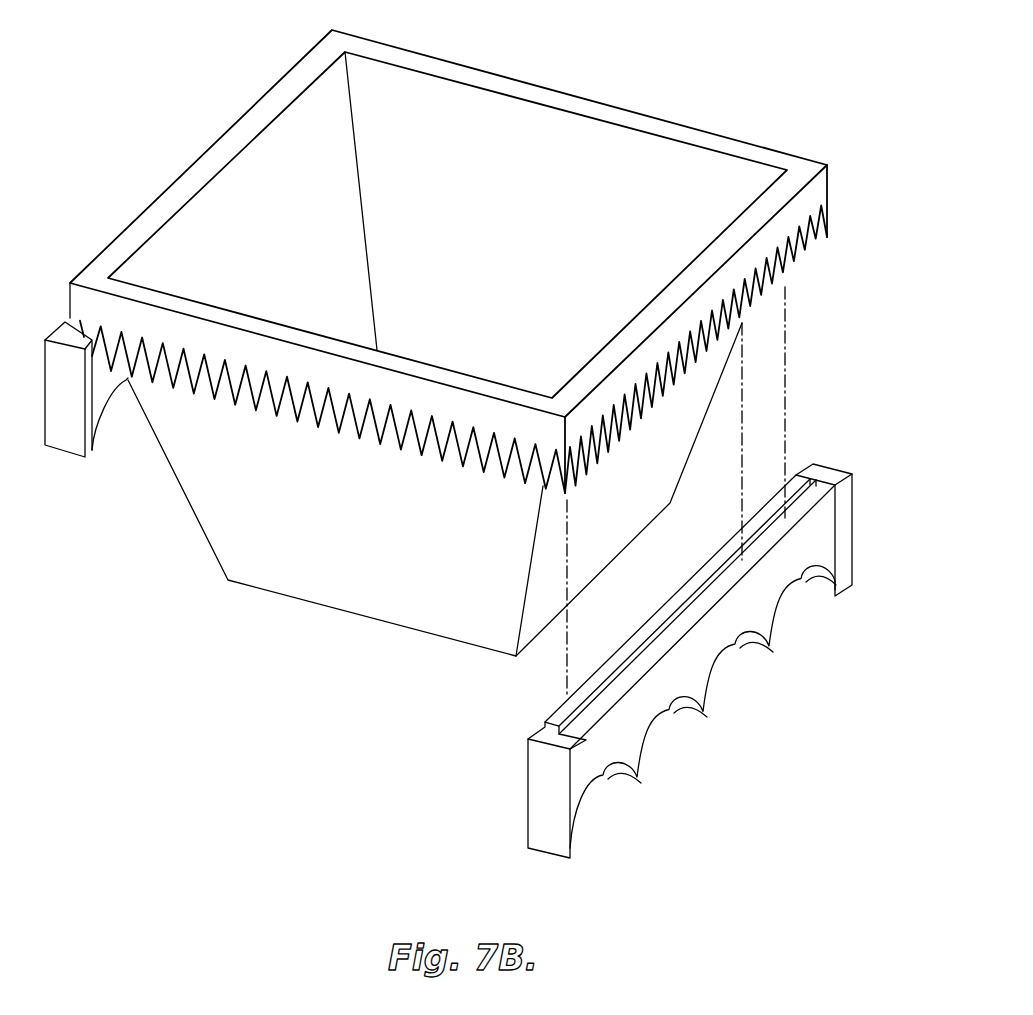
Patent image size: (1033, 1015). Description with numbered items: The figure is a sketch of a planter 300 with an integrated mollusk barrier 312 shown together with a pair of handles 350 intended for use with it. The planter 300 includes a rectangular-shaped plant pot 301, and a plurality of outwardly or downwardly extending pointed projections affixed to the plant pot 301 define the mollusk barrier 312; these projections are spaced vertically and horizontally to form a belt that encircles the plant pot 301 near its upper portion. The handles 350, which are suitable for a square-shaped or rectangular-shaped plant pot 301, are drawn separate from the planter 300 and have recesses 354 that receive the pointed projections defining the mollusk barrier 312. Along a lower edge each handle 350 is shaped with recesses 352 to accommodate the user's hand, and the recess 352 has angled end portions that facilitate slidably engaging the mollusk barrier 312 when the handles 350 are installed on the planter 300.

The planter 300 is at (754, 76).
The plant pot 301 is at (357, 604).
The mollusk barrier 312 is at (828, 243).
The handles 350 is at (73, 447).
The recesses 352 is at (722, 673).
The recesses 354 is at (682, 605).